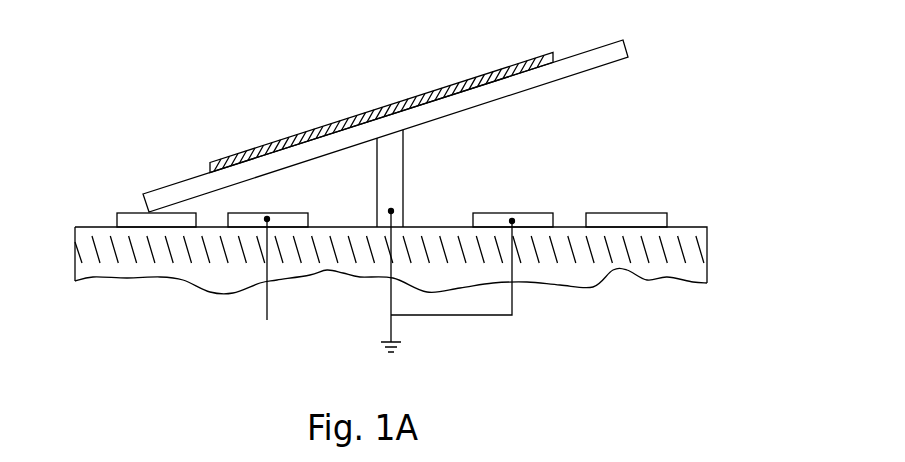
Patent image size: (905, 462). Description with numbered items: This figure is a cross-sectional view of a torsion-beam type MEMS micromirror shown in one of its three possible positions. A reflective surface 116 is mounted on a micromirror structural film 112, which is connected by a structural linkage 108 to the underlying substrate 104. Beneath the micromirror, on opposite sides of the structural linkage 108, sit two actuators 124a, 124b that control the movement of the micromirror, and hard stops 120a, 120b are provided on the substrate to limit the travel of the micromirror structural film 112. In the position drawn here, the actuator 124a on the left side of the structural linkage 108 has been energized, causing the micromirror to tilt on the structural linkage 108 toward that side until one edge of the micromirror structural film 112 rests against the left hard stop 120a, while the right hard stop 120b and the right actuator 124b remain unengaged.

The substrate 104 is at (702, 238).
The structural linkage 108 is at (403, 158).
The micromirror structural film 112 is at (568, 68).
The reflective surface 116 is at (252, 150).
The left hard stop 120a is at (127, 212).
The right hard stop 120b is at (640, 213).
The left actuator 124a is at (260, 213).
The right actuator 124b is at (483, 214).